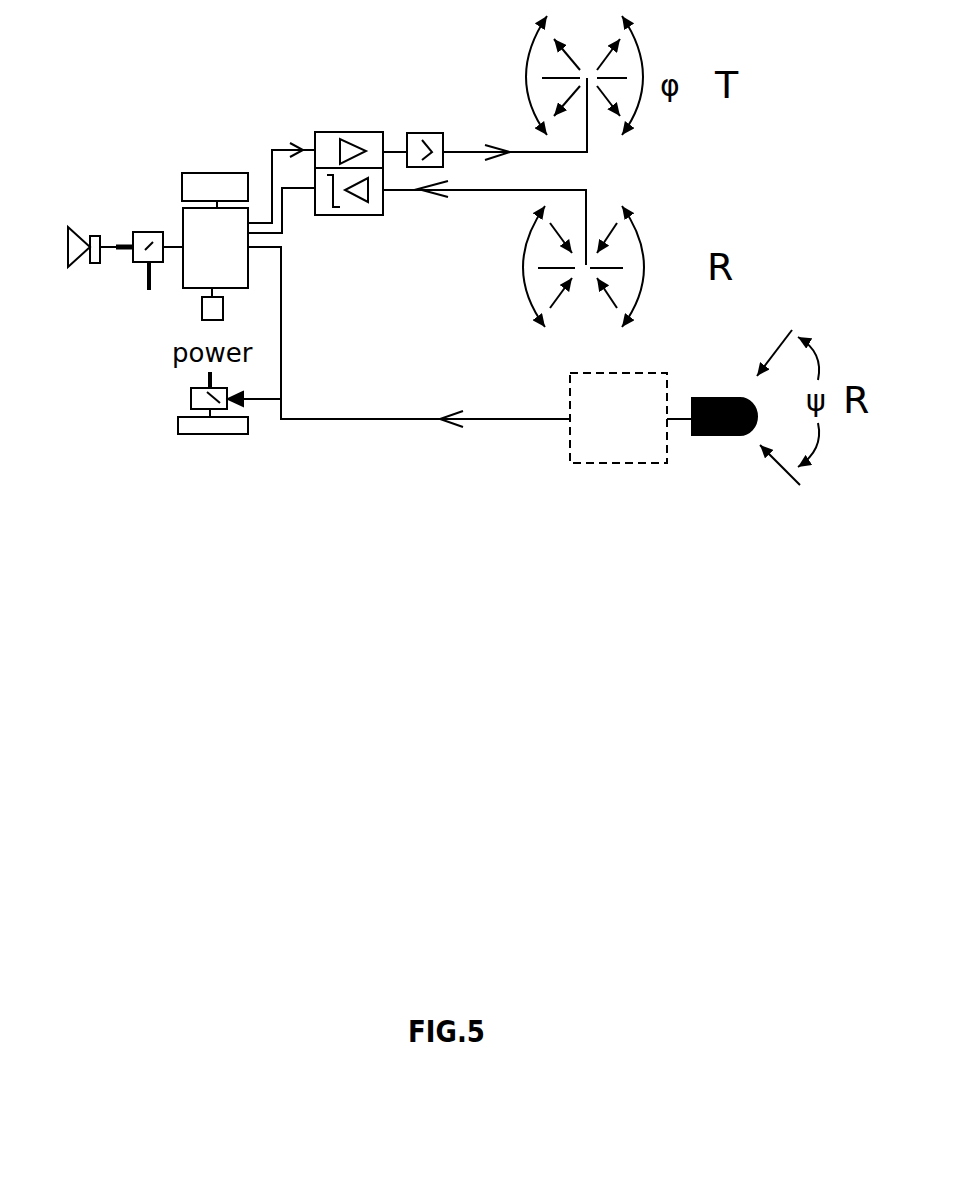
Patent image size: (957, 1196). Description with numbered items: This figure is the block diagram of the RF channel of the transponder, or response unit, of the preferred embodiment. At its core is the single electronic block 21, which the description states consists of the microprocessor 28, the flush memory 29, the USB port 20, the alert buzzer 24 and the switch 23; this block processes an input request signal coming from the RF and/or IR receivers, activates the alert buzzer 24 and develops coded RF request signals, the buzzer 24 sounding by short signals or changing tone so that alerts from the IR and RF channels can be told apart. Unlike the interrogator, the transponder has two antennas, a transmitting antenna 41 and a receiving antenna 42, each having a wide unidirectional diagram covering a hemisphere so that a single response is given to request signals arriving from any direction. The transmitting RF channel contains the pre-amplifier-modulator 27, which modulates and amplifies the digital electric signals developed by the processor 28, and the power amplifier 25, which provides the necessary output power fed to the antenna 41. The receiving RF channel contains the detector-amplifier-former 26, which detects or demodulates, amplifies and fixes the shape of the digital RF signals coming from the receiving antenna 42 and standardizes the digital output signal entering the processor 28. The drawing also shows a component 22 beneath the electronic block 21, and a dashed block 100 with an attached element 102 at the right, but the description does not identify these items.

The USB port 20 is at (193, 305).
The electronic block 21 is at (182, 398).
The battery 22 is at (188, 440).
The switch 23 is at (127, 273).
The alert buzzer 24 is at (77, 273).
The power amplifier 25 is at (415, 122).
The detector-amplifier-former 26 is at (392, 200).
The pre-amplifier-modulator 27 is at (342, 123).
The microprocessor 28 is at (178, 213).
The flush memory 29 is at (213, 167).
The transmitting antenna 41 is at (648, 117).
The receiving antenna 42 is at (655, 250).
The receiver unit 100 is at (565, 452).
The sensor/receiving element 102 is at (727, 438).